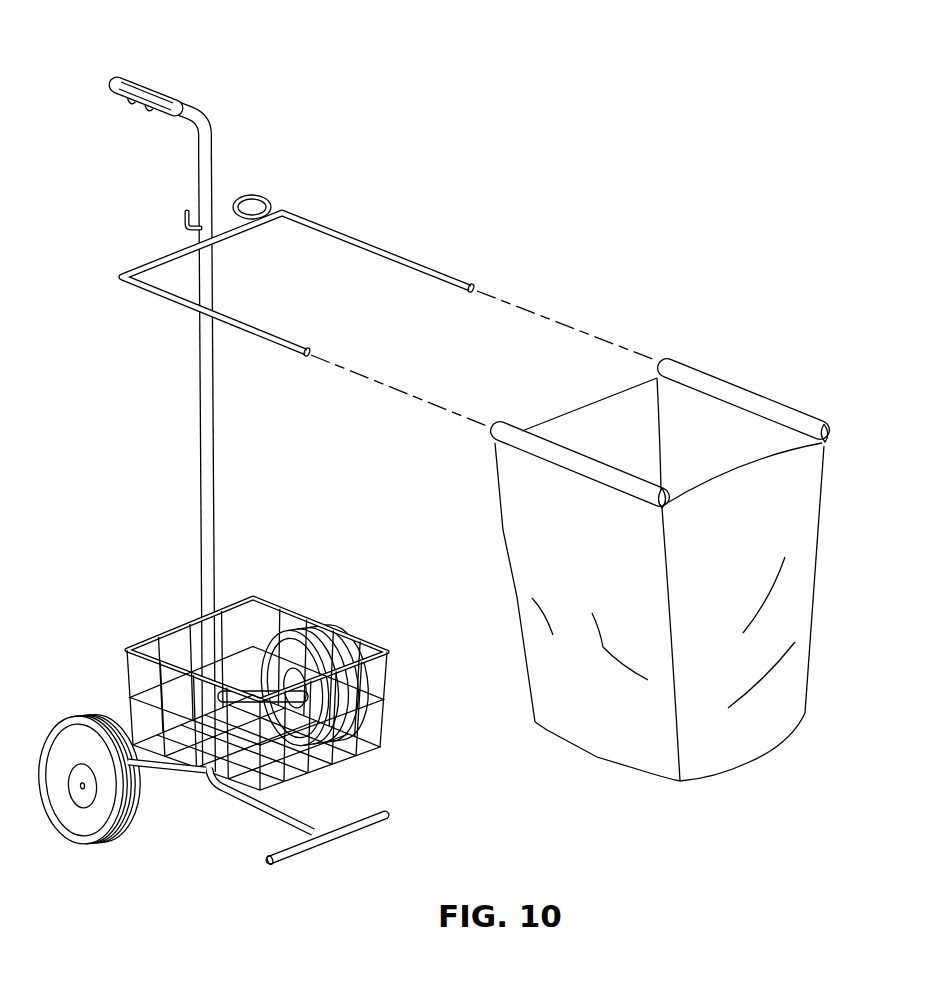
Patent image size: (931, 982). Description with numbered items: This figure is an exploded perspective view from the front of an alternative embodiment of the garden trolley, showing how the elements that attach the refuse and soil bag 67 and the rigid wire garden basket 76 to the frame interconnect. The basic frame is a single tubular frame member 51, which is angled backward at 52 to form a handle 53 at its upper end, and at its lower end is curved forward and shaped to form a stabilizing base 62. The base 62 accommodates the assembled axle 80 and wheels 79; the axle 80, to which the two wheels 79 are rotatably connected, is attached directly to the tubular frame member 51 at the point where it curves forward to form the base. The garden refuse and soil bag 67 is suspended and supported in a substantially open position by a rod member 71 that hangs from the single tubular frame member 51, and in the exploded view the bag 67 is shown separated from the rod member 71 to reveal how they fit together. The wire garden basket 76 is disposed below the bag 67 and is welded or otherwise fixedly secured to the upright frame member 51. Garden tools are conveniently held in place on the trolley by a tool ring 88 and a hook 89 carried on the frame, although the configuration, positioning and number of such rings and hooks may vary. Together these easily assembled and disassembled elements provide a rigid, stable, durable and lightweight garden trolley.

The tubular frame member 51 is at (200, 421).
The angled portion of tubular frame member 52 is at (208, 124).
The handle 53 is at (156, 90).
The stabilizing base 62 is at (298, 817).
The refuse and soil bag 67 is at (517, 597).
The rod member 71 is at (229, 232).
The wire garden basket 76 is at (388, 674).
The wheels 79 is at (98, 843).
The axle 80 is at (147, 763).
The tool ring 88 is at (256, 194).
The hook 89 is at (182, 220).